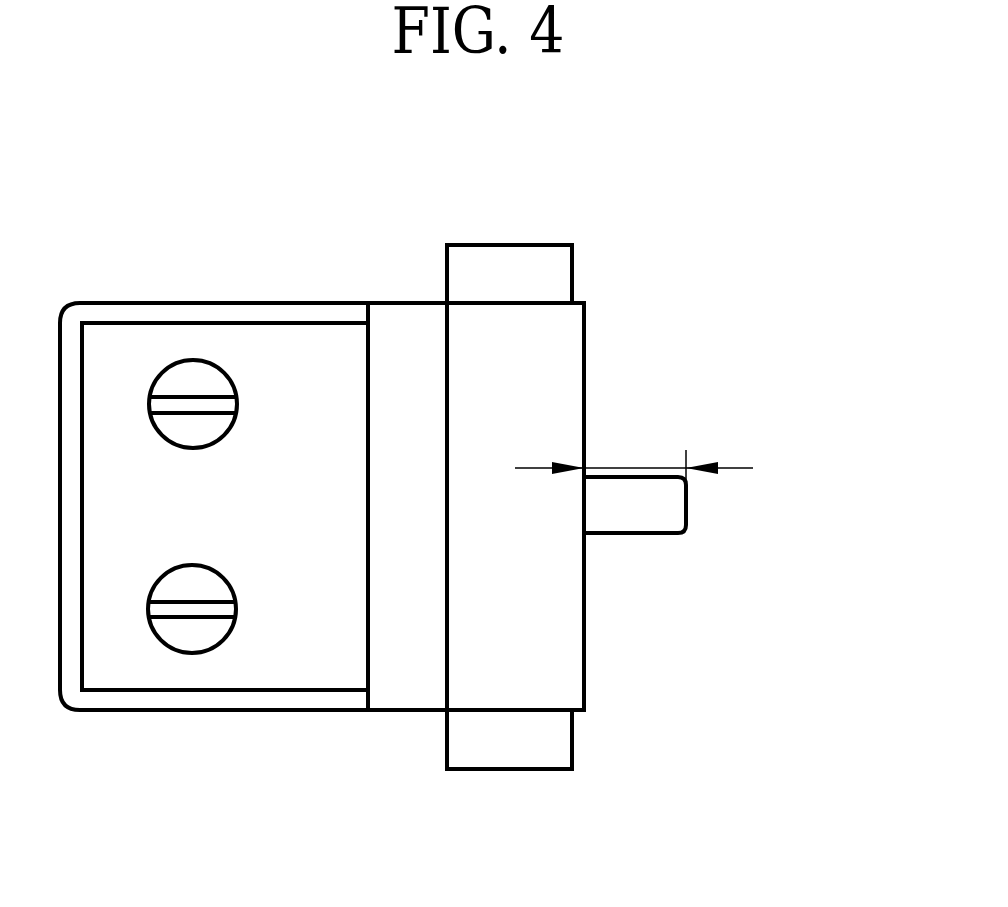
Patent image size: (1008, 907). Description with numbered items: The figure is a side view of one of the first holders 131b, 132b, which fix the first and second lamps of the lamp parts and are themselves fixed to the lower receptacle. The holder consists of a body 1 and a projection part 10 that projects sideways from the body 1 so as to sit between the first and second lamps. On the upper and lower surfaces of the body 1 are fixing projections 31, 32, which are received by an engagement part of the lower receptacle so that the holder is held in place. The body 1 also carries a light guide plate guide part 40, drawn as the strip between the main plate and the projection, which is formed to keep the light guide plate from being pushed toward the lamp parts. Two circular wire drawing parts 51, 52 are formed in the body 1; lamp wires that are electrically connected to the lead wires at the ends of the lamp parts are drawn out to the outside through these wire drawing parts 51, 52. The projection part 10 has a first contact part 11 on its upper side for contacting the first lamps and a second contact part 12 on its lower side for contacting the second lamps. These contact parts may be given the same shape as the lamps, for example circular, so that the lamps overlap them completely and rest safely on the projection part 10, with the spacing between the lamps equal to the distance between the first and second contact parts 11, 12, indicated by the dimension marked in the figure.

The body 1 is at (333, 303).
The projection part 10 is at (686, 502).
The first contact part 11 is at (655, 476).
The second contact part 12 is at (630, 535).
The fixing projection 31 is at (507, 263).
The fixing projection 32 is at (506, 748).
The light guide plate guide part 40 is at (408, 687).
The wire drawing part 51 is at (185, 380).
The wire drawing part 52 is at (185, 630).
The first holder 131b is at (890, 214).
The first holder 132b is at (515, 506).